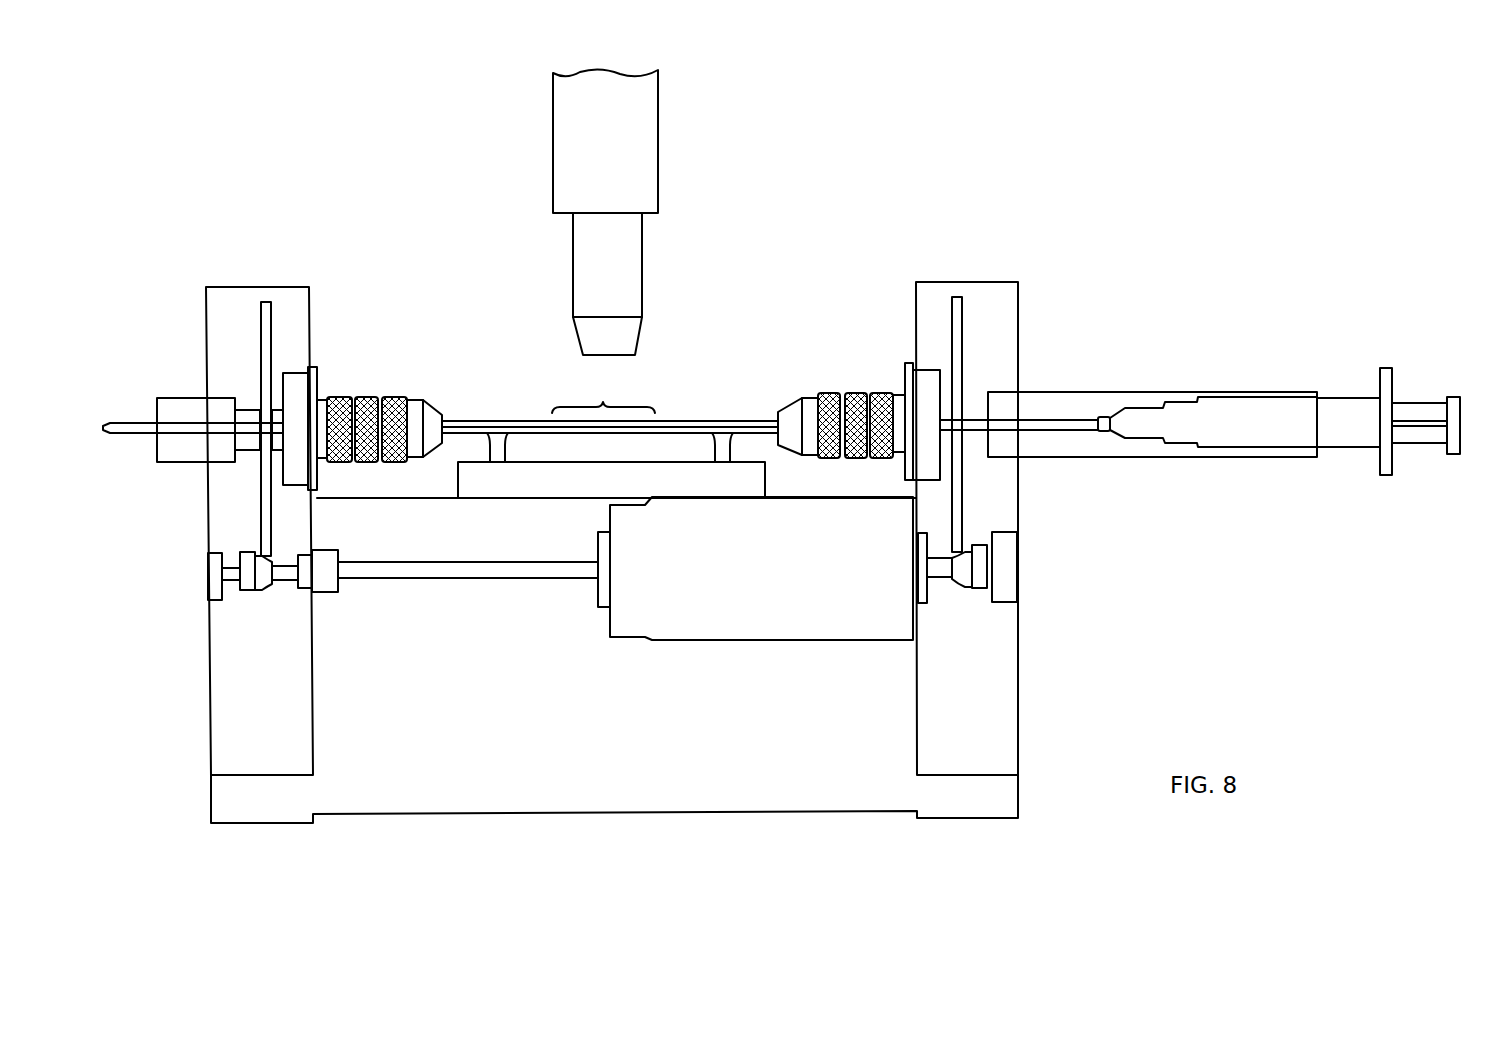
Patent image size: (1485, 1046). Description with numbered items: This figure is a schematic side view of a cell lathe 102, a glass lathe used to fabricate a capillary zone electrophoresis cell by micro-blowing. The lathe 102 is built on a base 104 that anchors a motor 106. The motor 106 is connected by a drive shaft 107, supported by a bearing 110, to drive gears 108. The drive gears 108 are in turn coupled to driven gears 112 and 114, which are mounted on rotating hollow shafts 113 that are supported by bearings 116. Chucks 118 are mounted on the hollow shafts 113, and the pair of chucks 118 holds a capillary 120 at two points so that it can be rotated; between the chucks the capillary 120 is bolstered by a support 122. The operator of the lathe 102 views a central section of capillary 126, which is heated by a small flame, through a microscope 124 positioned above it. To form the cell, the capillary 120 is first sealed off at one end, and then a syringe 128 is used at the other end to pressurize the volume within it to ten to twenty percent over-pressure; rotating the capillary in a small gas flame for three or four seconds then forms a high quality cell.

The cell lathe 102 is at (878, 175).
The base 104 is at (858, 811).
The motor 106 is at (815, 625).
The drive shaft 107 is at (480, 580).
The drive gears 108 is at (253, 592).
The bearing 110 is at (331, 593).
The driven gears 112 is at (263, 503).
The rotating hollow shafts 113 is at (243, 387).
The driven gears 114 is at (260, 325).
The bearings 116 is at (215, 400).
The chucks 118 is at (385, 397).
The capillary 120 is at (114, 434).
The support 122 is at (575, 445).
The microscope 124 is at (642, 283).
The central section of capillary 126 is at (608, 400).
The syringe 128 is at (1343, 395).